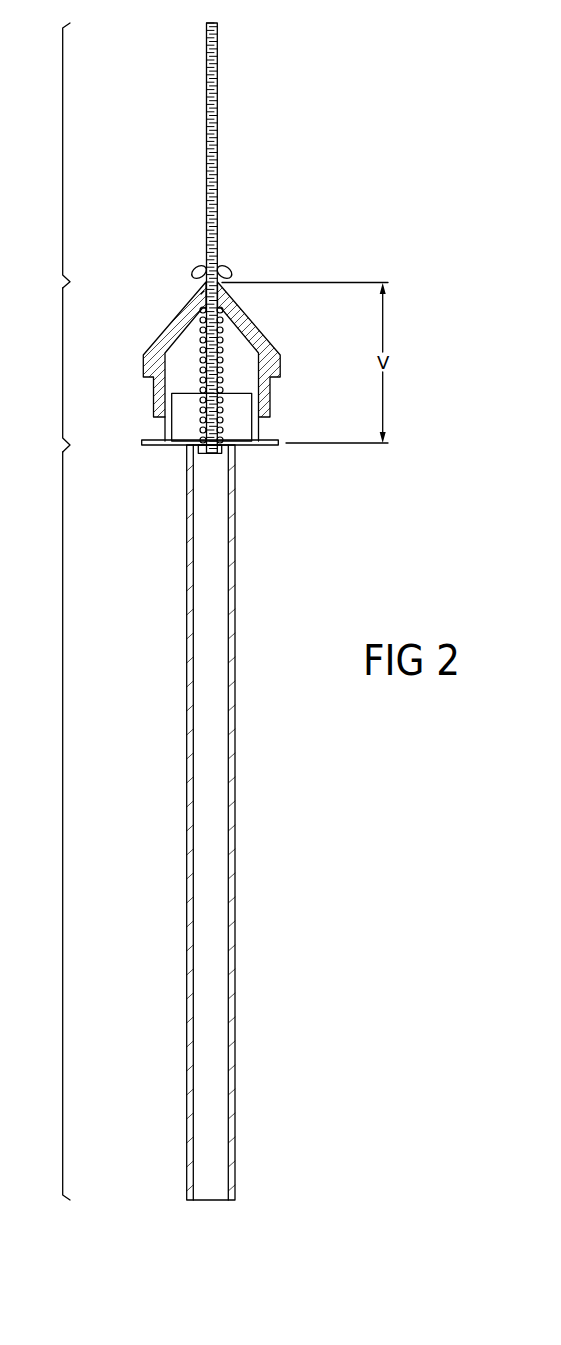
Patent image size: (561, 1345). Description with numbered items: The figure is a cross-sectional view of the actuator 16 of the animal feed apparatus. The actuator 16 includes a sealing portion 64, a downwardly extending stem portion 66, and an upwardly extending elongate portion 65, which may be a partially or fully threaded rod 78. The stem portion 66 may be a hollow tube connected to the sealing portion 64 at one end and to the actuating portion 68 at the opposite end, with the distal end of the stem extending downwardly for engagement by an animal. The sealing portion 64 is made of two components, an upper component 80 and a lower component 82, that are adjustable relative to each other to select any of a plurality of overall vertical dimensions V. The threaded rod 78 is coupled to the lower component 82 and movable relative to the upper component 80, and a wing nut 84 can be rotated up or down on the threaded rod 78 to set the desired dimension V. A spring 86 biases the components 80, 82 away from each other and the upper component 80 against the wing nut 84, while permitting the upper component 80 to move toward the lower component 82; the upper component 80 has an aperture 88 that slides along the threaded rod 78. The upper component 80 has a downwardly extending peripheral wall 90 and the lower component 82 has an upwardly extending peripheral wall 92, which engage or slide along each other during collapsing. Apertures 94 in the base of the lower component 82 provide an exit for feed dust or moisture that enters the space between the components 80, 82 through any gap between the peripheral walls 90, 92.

The actuator 16 is at (259, 247).
The sealing portion 64 is at (63, 358).
The elongate portion 65 is at (63, 146).
The stem portion 66 is at (63, 816).
The stem portion 68 is at (234, 1181).
The threaded rod 78 is at (217, 126).
The upper component 80 is at (266, 319).
The lower component 82 is at (257, 428).
The wing nut 84 is at (228, 271).
The spring 86 is at (225, 370).
The aperture 88 is at (201, 294).
The peripheral wall 90 is at (263, 395).
The peripheral wall 92 is at (168, 432).
The apertures 94 is at (237, 446).